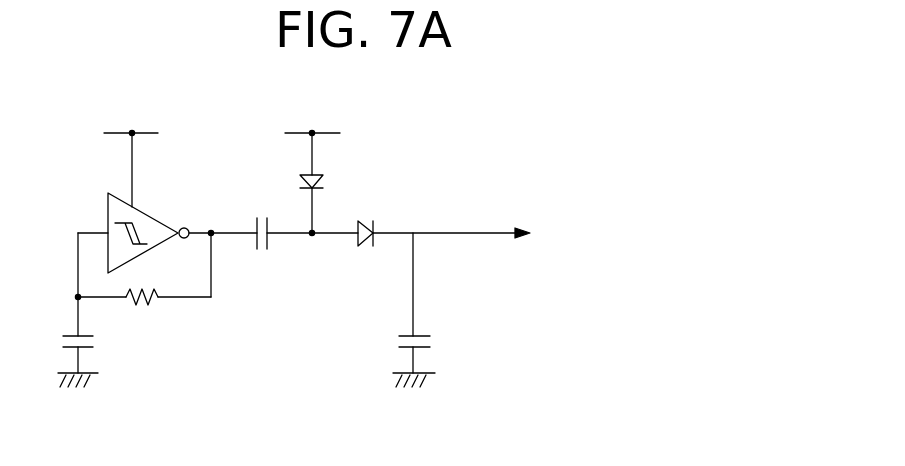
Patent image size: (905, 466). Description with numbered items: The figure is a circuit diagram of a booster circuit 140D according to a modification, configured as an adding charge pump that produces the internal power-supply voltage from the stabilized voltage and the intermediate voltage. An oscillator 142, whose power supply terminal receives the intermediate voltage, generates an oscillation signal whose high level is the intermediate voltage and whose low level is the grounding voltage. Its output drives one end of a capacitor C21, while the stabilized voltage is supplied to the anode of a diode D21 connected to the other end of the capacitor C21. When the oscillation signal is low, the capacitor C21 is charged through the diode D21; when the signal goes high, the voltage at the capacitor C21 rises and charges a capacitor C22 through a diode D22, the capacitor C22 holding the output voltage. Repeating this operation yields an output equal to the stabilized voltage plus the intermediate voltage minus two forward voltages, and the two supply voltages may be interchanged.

The booster circuit 140D is at (522, 137).
The oscillator 142 is at (222, 394).
The capacitor C21 is at (262, 250).
The diode D21 is at (325, 187).
The diode D22 is at (363, 250).
The capacitor C22 is at (398, 340).